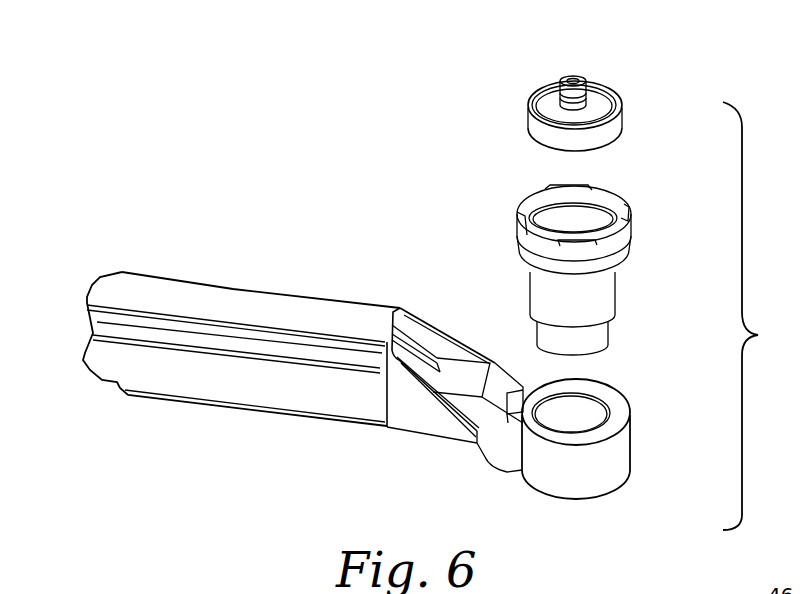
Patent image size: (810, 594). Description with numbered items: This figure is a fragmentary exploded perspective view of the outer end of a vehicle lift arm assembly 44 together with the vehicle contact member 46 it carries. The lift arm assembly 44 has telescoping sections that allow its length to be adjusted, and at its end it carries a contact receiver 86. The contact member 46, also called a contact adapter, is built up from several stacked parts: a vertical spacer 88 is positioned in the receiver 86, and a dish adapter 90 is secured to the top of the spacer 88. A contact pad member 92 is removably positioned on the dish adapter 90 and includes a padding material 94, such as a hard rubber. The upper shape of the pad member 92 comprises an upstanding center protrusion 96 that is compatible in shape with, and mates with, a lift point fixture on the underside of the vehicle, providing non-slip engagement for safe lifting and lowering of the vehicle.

The vehicle lift arm assembly 44 is at (227, 390).
The vehicle contact member 46 is at (503, 75).
The contact receiver 86 is at (598, 477).
The vertical spacer 88 is at (530, 297).
The dish adapter 90 is at (597, 192).
The contact pad member 92 is at (535, 128).
The padding material 94 is at (607, 97).
The upstanding center protrusion 96 is at (577, 75).